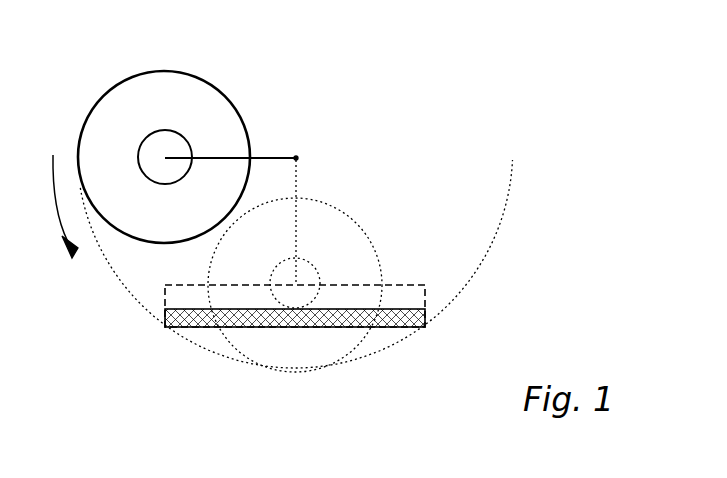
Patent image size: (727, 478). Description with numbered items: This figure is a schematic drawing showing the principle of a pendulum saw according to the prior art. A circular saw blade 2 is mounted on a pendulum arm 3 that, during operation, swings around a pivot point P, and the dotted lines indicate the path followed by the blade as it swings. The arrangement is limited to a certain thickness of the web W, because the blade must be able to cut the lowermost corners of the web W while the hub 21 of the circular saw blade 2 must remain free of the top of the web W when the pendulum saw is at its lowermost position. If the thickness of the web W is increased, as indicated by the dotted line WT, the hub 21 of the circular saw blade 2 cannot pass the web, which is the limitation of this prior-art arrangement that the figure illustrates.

The circular saw blade 2 is at (128, 100).
The hub 21 is at (165, 130).
The pendulum arm 3 is at (265, 152).
The pivot point P is at (302, 153).
The increased web thickness WT is at (408, 284).
The web W is at (400, 330).